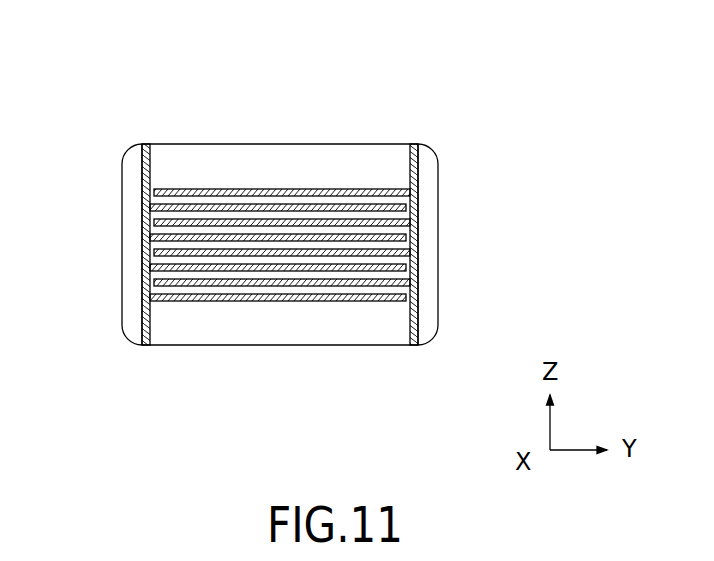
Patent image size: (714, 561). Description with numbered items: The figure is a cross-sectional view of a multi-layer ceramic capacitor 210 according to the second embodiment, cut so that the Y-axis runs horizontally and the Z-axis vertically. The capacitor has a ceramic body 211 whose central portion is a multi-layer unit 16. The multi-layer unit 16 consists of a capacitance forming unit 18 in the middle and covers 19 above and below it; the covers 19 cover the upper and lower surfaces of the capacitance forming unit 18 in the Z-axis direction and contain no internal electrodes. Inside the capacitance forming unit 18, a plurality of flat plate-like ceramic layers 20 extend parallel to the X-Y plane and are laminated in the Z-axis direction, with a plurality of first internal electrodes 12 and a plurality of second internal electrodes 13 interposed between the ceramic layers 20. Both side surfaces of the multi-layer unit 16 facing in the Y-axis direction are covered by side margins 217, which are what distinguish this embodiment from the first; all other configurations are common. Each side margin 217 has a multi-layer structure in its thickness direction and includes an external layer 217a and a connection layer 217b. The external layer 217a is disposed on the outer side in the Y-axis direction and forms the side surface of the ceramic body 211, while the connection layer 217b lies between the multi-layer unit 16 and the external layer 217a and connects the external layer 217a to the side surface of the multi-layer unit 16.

The multi-layer ceramic capacitor 210 is at (135, 63).
The ceramic body 211 is at (412, 102).
The multi-layer unit 16 is at (283, 133).
The first internal electrodes 12 is at (185, 294).
The second internal electrodes 13 is at (300, 279).
The capacitance forming unit 18 is at (331, 190).
The covers 19 is at (295, 179).
The ceramic layers 20 is at (411, 203).
The side margins 217 is at (187, 402).
The external layer 217a is at (125, 337).
The connection layer 217b is at (147, 340).